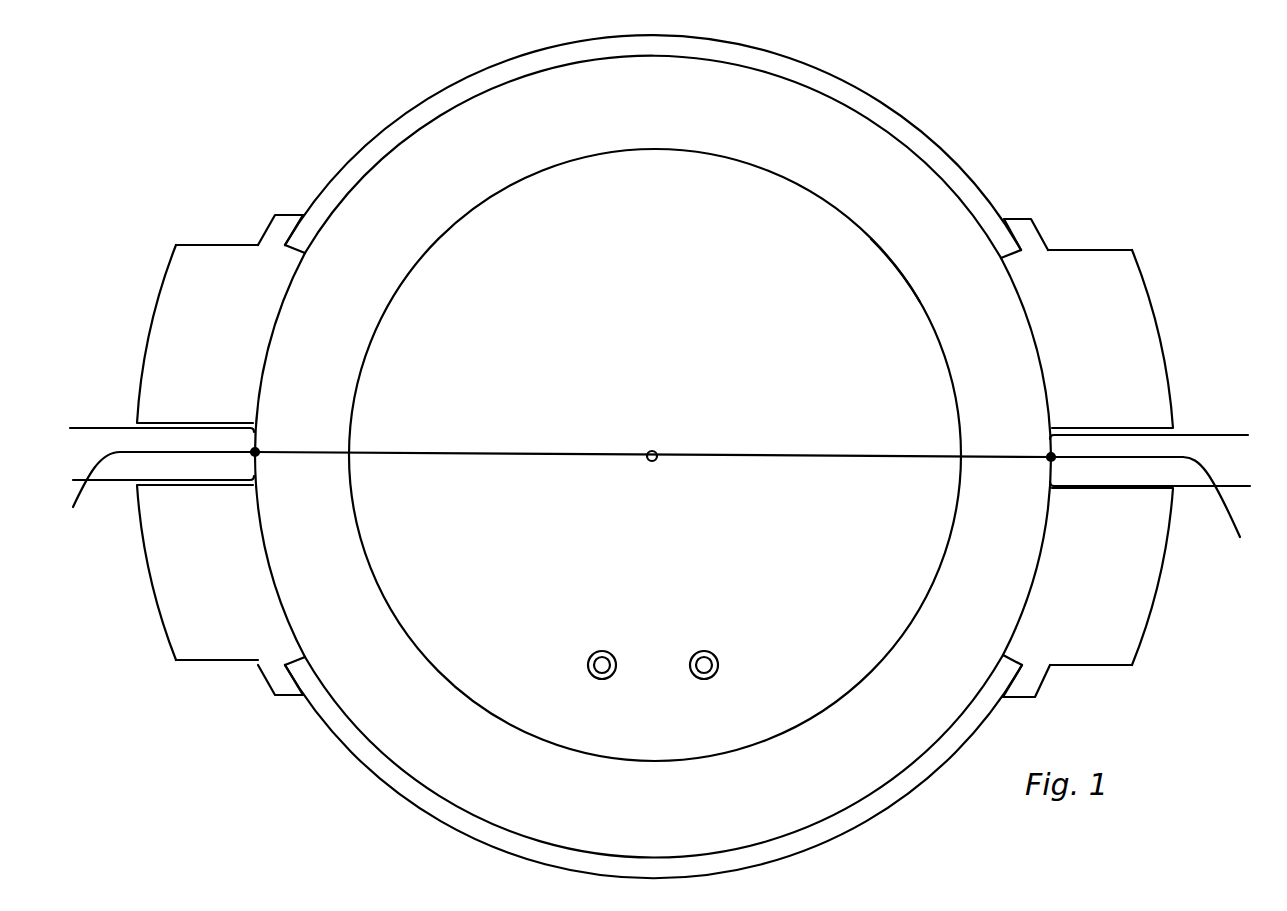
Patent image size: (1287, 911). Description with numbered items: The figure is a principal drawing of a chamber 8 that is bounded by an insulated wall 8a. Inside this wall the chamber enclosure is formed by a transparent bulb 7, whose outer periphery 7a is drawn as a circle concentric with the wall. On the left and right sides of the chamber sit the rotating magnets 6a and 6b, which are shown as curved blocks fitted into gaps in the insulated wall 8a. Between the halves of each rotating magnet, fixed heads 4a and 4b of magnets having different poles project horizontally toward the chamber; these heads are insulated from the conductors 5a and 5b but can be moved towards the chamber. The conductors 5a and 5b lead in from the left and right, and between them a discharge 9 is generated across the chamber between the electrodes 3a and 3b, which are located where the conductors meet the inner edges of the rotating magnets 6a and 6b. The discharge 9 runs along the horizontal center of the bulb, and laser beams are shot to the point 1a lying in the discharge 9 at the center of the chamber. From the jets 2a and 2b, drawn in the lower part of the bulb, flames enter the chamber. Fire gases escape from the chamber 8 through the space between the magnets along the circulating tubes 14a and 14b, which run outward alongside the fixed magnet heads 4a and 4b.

The laser target point 1a is at (644, 437).
The jet 2a is at (596, 647).
The jet 2b is at (708, 647).
The electrode 3a is at (274, 437).
The electrode 3b is at (1033, 442).
The fixed magnet head 4a is at (161, 456).
The fixed magnet head 4b is at (1150, 463).
The conductor 5a is at (83, 498).
The conductor 5b is at (1233, 507).
The rotating magnet 6a is at (221, 452).
The rotating magnet 6b is at (1087, 457).
The transparent bulb 7 is at (655, 455).
The outer periphery of the bulb 7a is at (891, 273).
The chamber 8 is at (654, 457).
The insulated wall 8a is at (654, 464).
The discharge 9 is at (653, 443).
The circulating tube 14a is at (162, 412).
The circulating tube 14b is at (1149, 417).